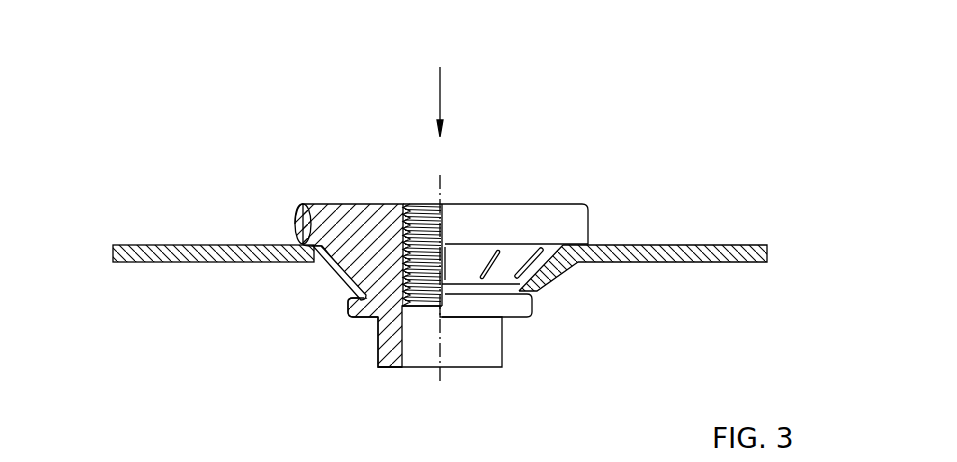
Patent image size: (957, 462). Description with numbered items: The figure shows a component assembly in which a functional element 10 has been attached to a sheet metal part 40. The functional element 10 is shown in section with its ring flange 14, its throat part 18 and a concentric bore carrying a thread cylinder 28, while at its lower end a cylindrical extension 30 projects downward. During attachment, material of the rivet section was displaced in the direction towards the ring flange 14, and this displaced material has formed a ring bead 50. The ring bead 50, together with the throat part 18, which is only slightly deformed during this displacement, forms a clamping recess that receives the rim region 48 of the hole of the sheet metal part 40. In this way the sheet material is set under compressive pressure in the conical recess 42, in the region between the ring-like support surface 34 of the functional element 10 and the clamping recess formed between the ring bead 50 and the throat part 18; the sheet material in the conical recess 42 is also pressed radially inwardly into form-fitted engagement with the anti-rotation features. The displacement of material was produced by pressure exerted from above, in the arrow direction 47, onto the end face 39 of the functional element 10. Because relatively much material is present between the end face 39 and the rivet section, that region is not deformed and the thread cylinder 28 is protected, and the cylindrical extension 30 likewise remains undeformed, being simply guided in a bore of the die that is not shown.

The functional element 10 is at (590, 218).
The ring flange 14 is at (295, 220).
The throat part 18 is at (383, 365).
The thread cylinder 28 is at (416, 204).
The cylindrical extension 30 is at (378, 352).
The ring-like support surface 34 is at (306, 204).
The end face 39 is at (535, 204).
The sheet metal part 40 is at (704, 263).
The conical recess 42 is at (541, 286).
The arrow direction 47 is at (441, 82).
The rim region 48 is at (353, 290).
The ring bead 50 is at (347, 312).